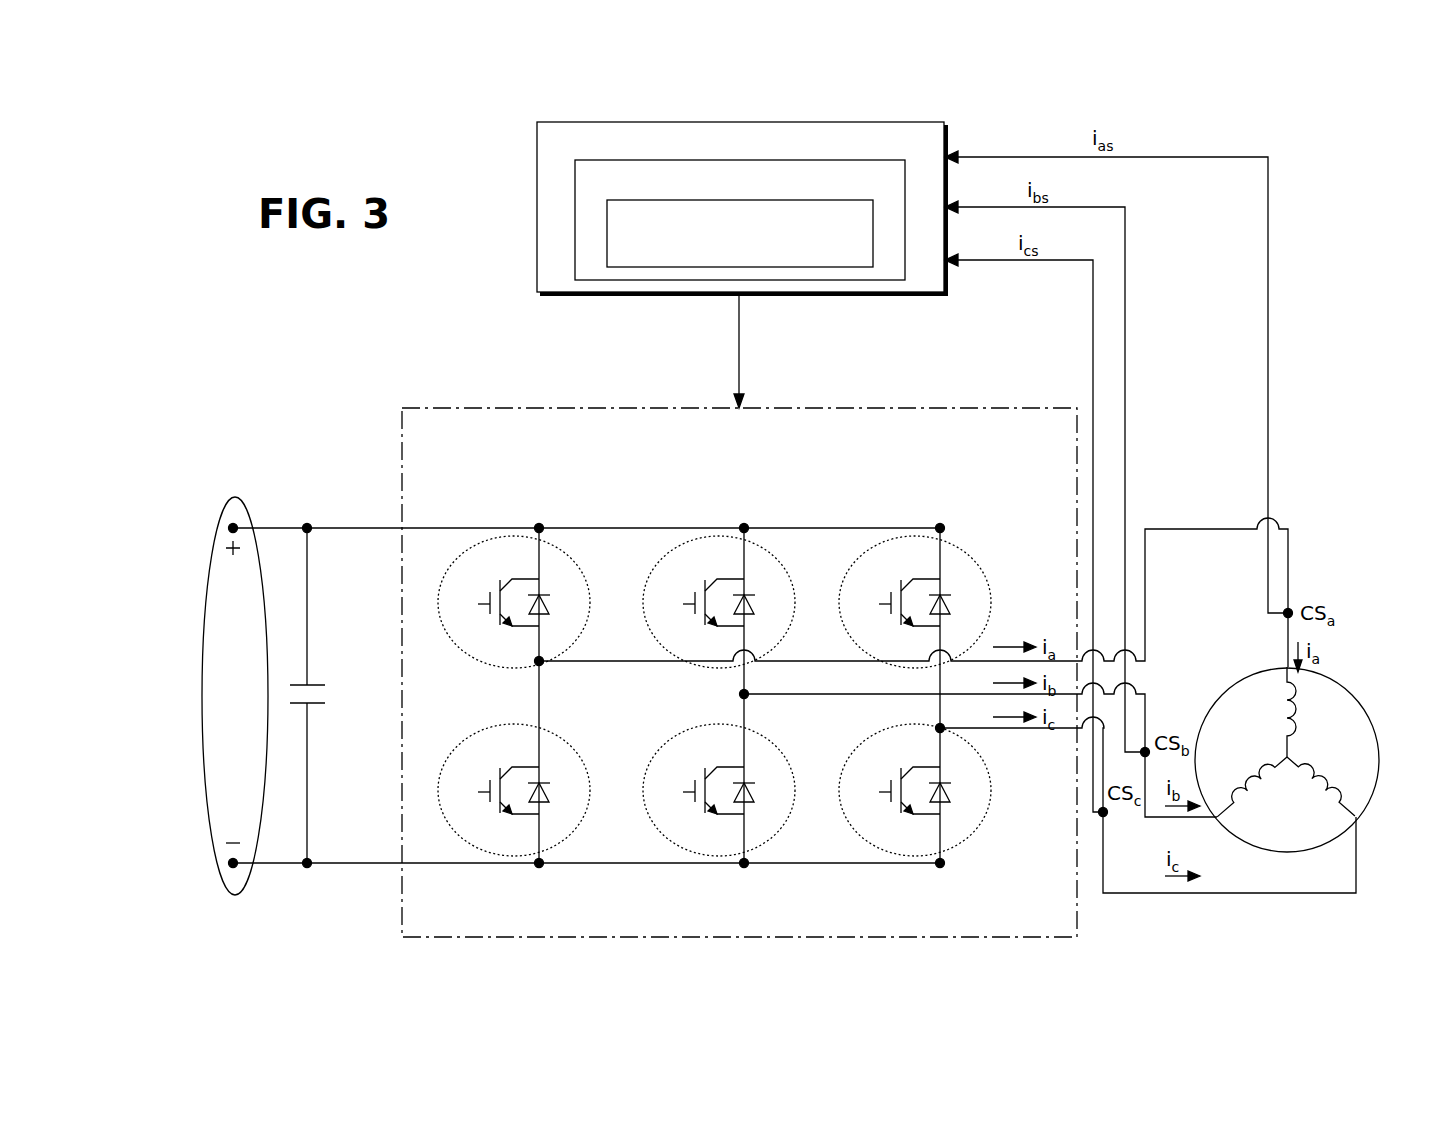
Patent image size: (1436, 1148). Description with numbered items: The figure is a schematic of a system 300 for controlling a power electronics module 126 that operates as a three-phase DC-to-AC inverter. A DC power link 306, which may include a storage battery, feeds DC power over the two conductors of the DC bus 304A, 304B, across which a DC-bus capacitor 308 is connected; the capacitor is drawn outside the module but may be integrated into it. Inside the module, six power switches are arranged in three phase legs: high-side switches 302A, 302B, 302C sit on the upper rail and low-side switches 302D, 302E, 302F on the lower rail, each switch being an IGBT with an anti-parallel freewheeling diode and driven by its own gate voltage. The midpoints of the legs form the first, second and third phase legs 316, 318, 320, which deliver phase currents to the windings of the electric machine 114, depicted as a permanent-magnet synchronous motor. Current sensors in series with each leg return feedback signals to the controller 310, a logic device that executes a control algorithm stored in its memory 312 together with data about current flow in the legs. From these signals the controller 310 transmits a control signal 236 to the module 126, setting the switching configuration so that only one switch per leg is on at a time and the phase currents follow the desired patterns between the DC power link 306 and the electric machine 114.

The system 300 is at (1036, 116).
The controller 310 is at (739, 122).
The memory 312 is at (895, 160).
The control signal 236 is at (735, 347).
The power electronics module 126 is at (590, 406).
The DC power link 306 is at (233, 497).
The DC bus rail 304A is at (370, 527).
The DC bus rail 304B is at (370, 863).
The DC-bus capacitor 308 is at (315, 705).
The high-side switch 302A is at (502, 536).
The high-side switch 302B is at (707, 536).
The high-side switch 302C is at (905, 536).
The low-side switch 302D is at (508, 857).
The low-side switch 302E is at (713, 857).
The low-side switch 302F is at (906, 857).
The first phase leg 316 is at (539, 663).
The second phase leg 318 is at (744, 694).
The third phase leg 320 is at (940, 728).
The electric machine 114 is at (1352, 692).